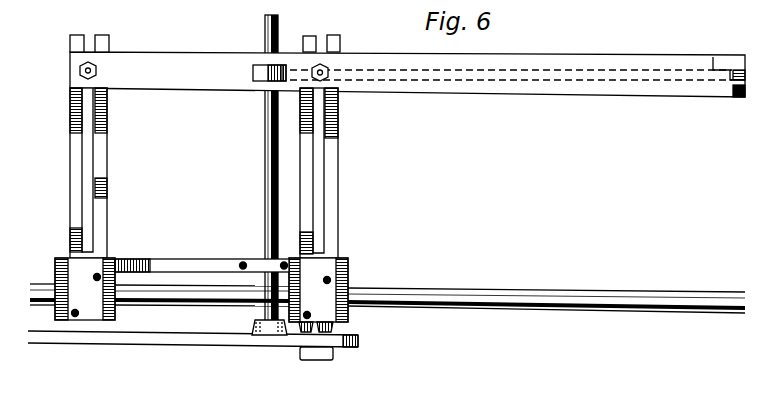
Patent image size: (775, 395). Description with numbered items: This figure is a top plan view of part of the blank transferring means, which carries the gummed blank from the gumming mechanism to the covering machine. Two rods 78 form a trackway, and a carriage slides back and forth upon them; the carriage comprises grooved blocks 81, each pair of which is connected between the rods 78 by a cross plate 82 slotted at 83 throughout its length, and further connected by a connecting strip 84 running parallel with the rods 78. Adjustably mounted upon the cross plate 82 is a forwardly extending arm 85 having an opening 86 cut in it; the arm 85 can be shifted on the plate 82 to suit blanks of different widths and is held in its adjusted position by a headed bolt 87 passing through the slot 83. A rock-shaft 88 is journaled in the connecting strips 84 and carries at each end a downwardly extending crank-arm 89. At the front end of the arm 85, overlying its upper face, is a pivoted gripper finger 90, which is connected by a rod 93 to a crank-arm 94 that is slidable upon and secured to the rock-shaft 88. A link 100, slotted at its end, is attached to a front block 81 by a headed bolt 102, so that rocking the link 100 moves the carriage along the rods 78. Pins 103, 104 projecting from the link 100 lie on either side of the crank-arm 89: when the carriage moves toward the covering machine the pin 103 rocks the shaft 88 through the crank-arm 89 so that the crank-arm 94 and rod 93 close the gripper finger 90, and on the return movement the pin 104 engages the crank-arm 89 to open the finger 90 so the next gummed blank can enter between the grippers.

The rods 78 is at (500, 296).
The blocks 81 is at (118, 318).
The cross plates 82 is at (105, 211).
The slots 83 is at (82, 219).
The connecting strips 84 is at (177, 259).
The forwardly extending arms 85 is at (450, 89).
The opening 86 is at (258, 65).
The headed bolts 87 is at (97, 64).
The rock-shaft 88 is at (265, 203).
The crank-arm 89 is at (265, 338).
The gripper finger 90 is at (722, 66).
The rod 93 is at (521, 69).
The crank-arm 94 is at (283, 65).
The link 100 is at (178, 347).
The headed bolt 102 is at (322, 353).
The pin 103 is at (255, 331).
The pin 104 is at (289, 333).